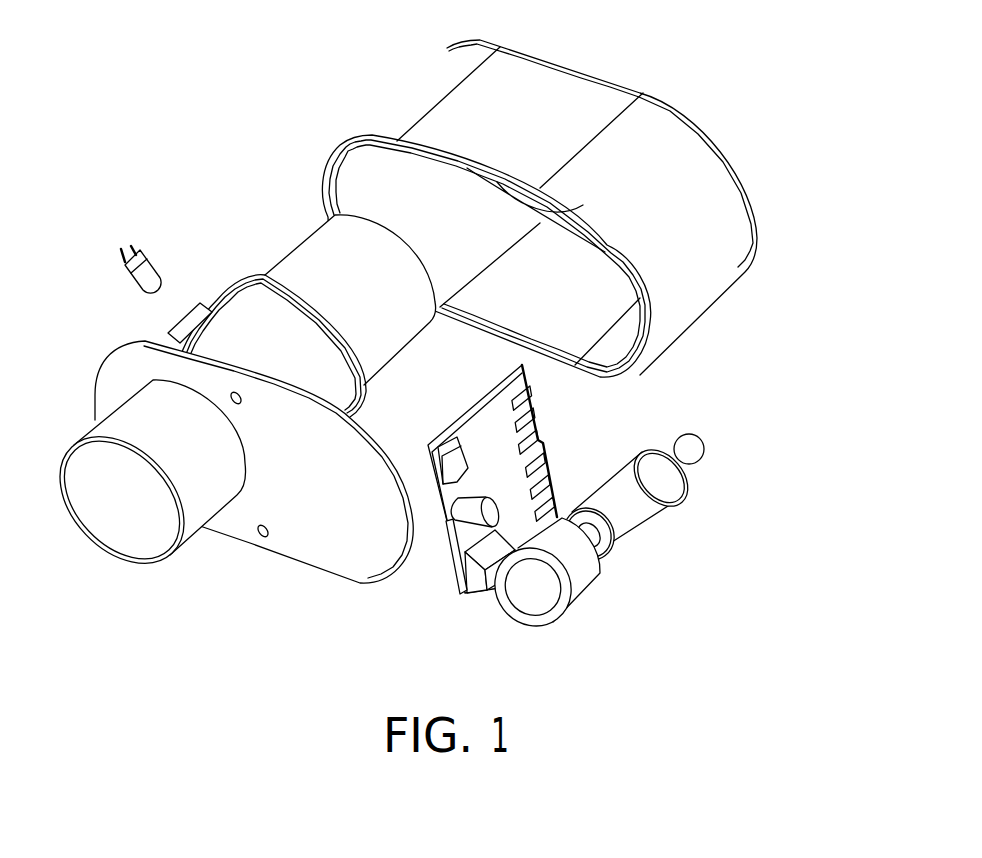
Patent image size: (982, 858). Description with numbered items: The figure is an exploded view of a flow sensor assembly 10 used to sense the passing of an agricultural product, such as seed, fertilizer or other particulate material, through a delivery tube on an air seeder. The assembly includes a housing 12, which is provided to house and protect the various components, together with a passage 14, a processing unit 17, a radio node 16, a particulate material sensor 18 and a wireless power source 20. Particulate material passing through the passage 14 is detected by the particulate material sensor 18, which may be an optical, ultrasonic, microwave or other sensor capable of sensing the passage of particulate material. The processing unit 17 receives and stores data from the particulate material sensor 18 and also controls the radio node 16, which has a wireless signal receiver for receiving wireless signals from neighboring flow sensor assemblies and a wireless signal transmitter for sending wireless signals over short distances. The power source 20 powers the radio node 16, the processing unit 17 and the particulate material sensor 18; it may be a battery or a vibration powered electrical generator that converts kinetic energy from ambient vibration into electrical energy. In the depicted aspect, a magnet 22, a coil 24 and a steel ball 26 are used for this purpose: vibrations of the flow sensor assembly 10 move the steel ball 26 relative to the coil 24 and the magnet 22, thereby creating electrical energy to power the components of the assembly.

The flow sensor assembly 10 is at (784, 106).
The housing 12 is at (557, 97).
The passage 14 is at (83, 532).
The radio node 16 is at (447, 520).
The processing unit 17 is at (448, 548).
The particulate material sensor 18 is at (118, 278).
The wireless power source 20 is at (730, 550).
The magnet 22 is at (560, 628).
The coil 24 is at (619, 555).
The steel ball 26 is at (712, 452).